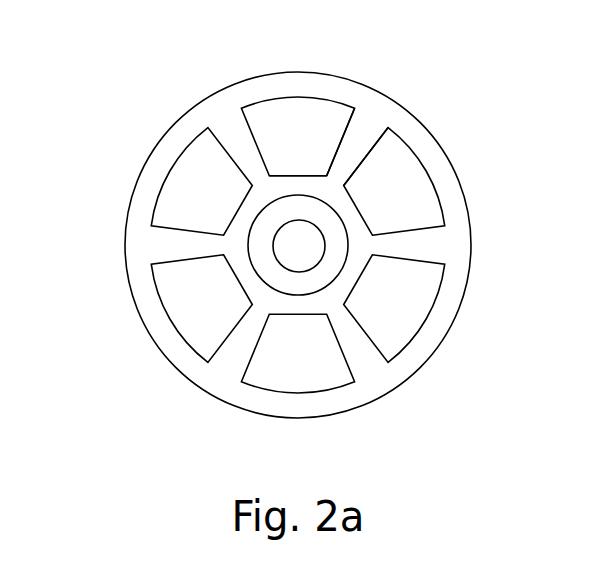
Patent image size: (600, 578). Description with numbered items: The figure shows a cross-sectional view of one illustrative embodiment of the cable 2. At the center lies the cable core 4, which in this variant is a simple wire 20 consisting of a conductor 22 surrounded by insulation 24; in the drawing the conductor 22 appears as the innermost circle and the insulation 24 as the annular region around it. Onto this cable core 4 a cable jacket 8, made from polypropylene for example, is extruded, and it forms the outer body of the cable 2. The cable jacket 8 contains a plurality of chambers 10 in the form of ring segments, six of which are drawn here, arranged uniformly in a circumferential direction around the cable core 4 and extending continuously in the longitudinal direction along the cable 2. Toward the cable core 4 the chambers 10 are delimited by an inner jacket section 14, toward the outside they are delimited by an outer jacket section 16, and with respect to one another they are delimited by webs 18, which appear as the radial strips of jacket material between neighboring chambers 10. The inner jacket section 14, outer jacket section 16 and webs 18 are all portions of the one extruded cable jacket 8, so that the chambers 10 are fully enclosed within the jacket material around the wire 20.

The cable 2 is at (133, 78).
The cable core 4 is at (229, 314).
The cable jacket 8 is at (146, 164).
The chambers 10 is at (297, 245).
The inner jacket section 14 is at (287, 183).
The outer jacket section 16 is at (310, 70).
The webs 18 is at (362, 133).
The wire 20 is at (275, 290).
The conductor 22 is at (299, 246).
The insulation 24 is at (312, 283).